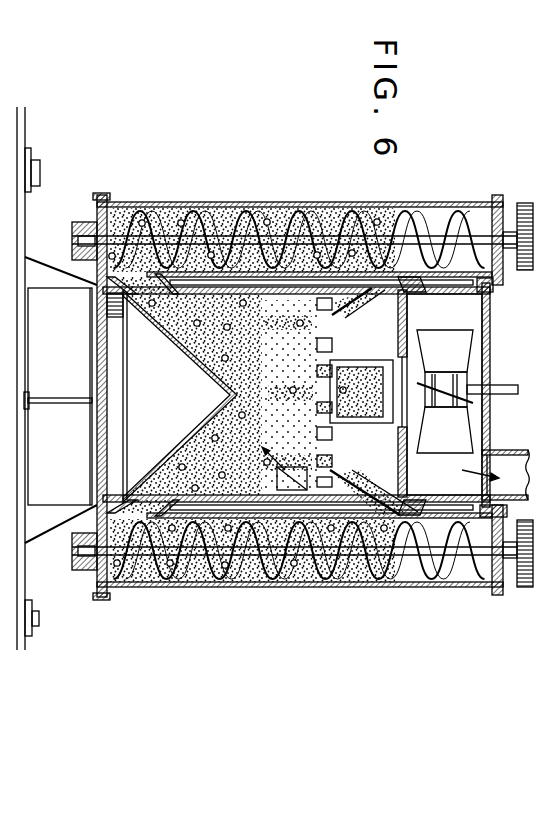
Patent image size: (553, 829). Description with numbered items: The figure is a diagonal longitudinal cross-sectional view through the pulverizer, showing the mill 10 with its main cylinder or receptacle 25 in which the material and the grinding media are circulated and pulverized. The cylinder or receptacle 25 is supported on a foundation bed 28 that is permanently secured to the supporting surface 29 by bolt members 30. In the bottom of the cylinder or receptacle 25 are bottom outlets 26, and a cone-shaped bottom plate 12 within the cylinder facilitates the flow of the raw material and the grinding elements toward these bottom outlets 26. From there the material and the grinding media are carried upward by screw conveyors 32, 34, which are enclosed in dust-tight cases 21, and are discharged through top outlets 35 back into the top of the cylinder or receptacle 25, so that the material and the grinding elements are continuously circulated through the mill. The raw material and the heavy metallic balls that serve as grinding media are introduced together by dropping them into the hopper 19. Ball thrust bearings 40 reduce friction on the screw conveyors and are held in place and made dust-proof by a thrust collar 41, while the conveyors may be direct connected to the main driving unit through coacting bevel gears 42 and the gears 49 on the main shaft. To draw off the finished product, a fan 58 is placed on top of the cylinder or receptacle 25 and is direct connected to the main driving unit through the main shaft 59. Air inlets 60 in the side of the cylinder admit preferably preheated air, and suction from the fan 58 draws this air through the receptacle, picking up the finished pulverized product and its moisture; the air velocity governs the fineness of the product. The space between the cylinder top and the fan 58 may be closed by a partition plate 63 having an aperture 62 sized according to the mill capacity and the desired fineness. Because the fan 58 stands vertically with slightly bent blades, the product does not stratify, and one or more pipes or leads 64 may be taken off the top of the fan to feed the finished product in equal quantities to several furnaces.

The material flow direction 10 is at (281, 403).
The hopper 12 is at (197, 434).
The hopper 19 is at (297, 323).
The lower conveyor housing 21 is at (338, 562).
The cylinder or receptacle 25 is at (275, 276).
The bottom outlets 26 is at (128, 212).
The foundation bed 28 is at (90, 378).
The supporting surface 29 is at (29, 545).
The bolt members 30 is at (40, 176).
The screw conveyor 32 is at (447, 562).
The screw conveyor 34 is at (428, 206).
The top outlets 35 is at (366, 300).
The ball thrust bearings 40 is at (73, 228).
The thrust collar 41 is at (99, 212).
The bevel gears 42 is at (530, 249).
The gears 49 is at (179, 220).
The fan 58 is at (445, 391).
The main shaft 59 is at (514, 396).
The air inlets 60 is at (317, 436).
The aperture 62 is at (408, 466).
The partition plate 63 is at (407, 317).
The pipes or leads 64 is at (518, 468).